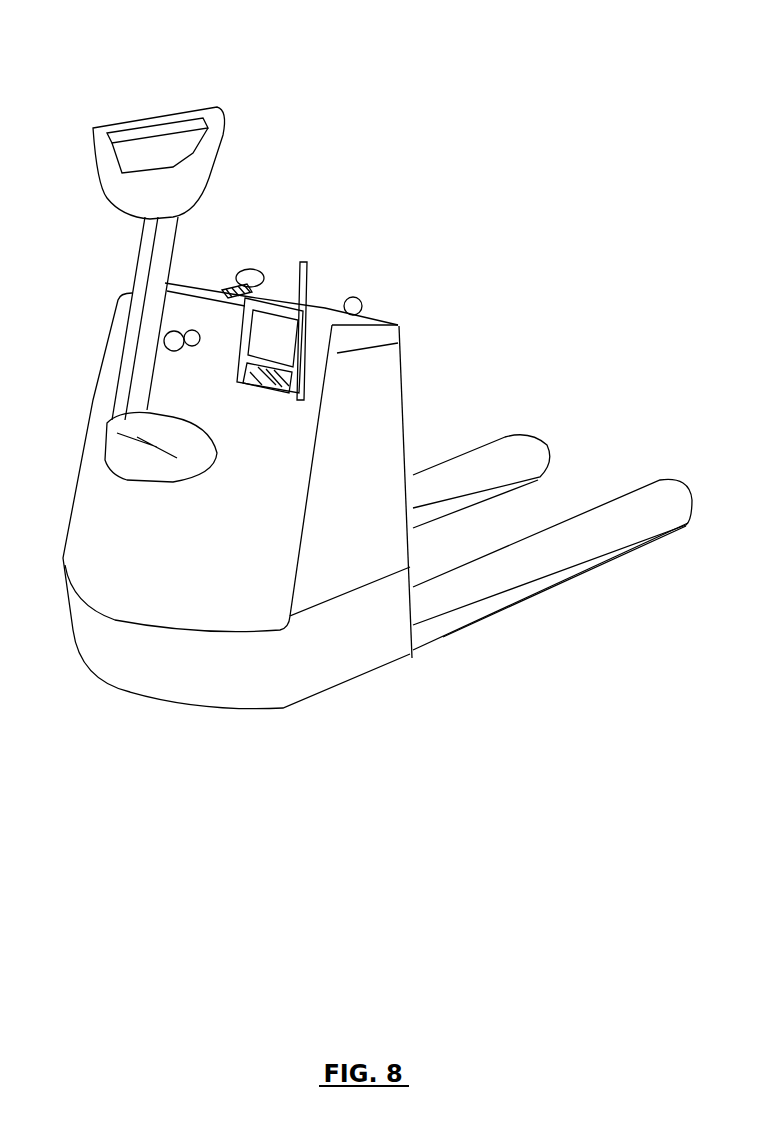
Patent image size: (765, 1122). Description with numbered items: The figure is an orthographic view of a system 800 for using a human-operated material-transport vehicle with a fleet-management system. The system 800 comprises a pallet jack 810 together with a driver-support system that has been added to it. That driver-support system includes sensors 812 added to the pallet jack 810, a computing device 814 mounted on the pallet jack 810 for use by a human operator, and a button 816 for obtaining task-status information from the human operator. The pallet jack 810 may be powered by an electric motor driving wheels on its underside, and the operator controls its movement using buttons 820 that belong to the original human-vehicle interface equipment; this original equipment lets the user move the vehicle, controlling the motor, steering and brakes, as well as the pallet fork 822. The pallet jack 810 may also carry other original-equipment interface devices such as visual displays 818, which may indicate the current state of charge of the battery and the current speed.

The system 800 is at (408, 98).
The pallet jack 810 is at (120, 453).
The sensors 812 is at (250, 272).
The computing device 814 is at (253, 563).
The button 816 is at (232, 291).
The visual displays 818 is at (120, 453).
The buttons 820 is at (131, 317).
The pallet fork 822 is at (503, 455).